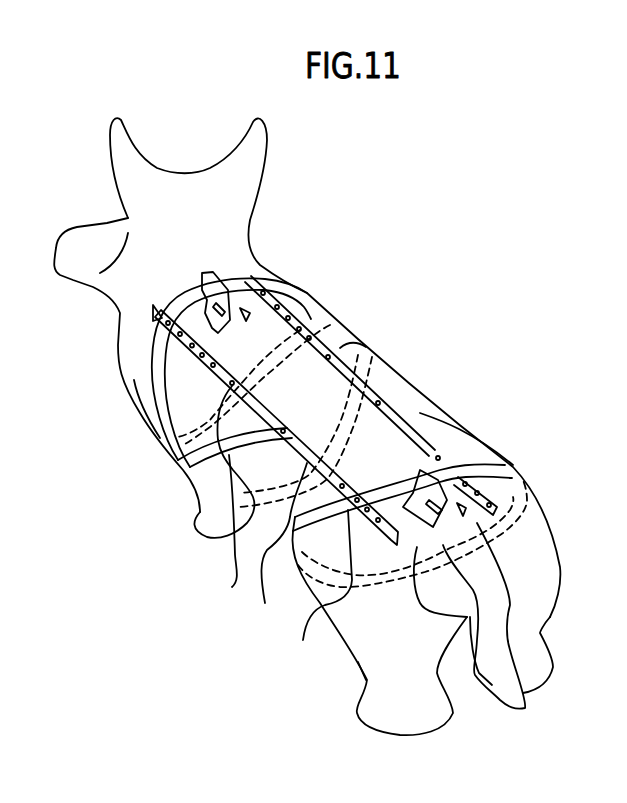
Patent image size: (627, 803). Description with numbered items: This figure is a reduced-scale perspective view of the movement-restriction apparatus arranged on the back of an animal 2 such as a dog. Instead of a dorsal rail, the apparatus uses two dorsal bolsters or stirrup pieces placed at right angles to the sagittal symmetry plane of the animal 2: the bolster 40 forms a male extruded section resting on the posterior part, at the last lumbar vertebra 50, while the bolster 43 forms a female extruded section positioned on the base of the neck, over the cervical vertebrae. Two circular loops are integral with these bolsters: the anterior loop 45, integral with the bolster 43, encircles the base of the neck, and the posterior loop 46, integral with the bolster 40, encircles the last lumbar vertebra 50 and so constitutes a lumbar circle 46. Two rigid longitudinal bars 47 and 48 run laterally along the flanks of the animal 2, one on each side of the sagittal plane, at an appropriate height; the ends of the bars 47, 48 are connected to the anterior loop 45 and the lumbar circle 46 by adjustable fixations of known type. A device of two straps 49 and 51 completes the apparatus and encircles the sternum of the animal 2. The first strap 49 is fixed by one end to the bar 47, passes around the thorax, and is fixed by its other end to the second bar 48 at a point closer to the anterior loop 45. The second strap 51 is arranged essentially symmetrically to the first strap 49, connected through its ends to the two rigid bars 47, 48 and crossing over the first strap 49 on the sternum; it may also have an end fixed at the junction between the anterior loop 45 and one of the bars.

The animal 2 is at (200, 140).
The dorsal bolster 40 is at (434, 477).
The dorsal bolster 43 is at (217, 276).
The anterior loop 45 is at (153, 362).
The lumbar circle 46 is at (321, 592).
The rigid longitudinal bar 47 is at (368, 347).
The rigid longitudinal bar 48 is at (279, 551).
The first strap 49 is at (218, 533).
The last lumbar vertebra 50 is at (470, 617).
The second strap 51 is at (210, 458).